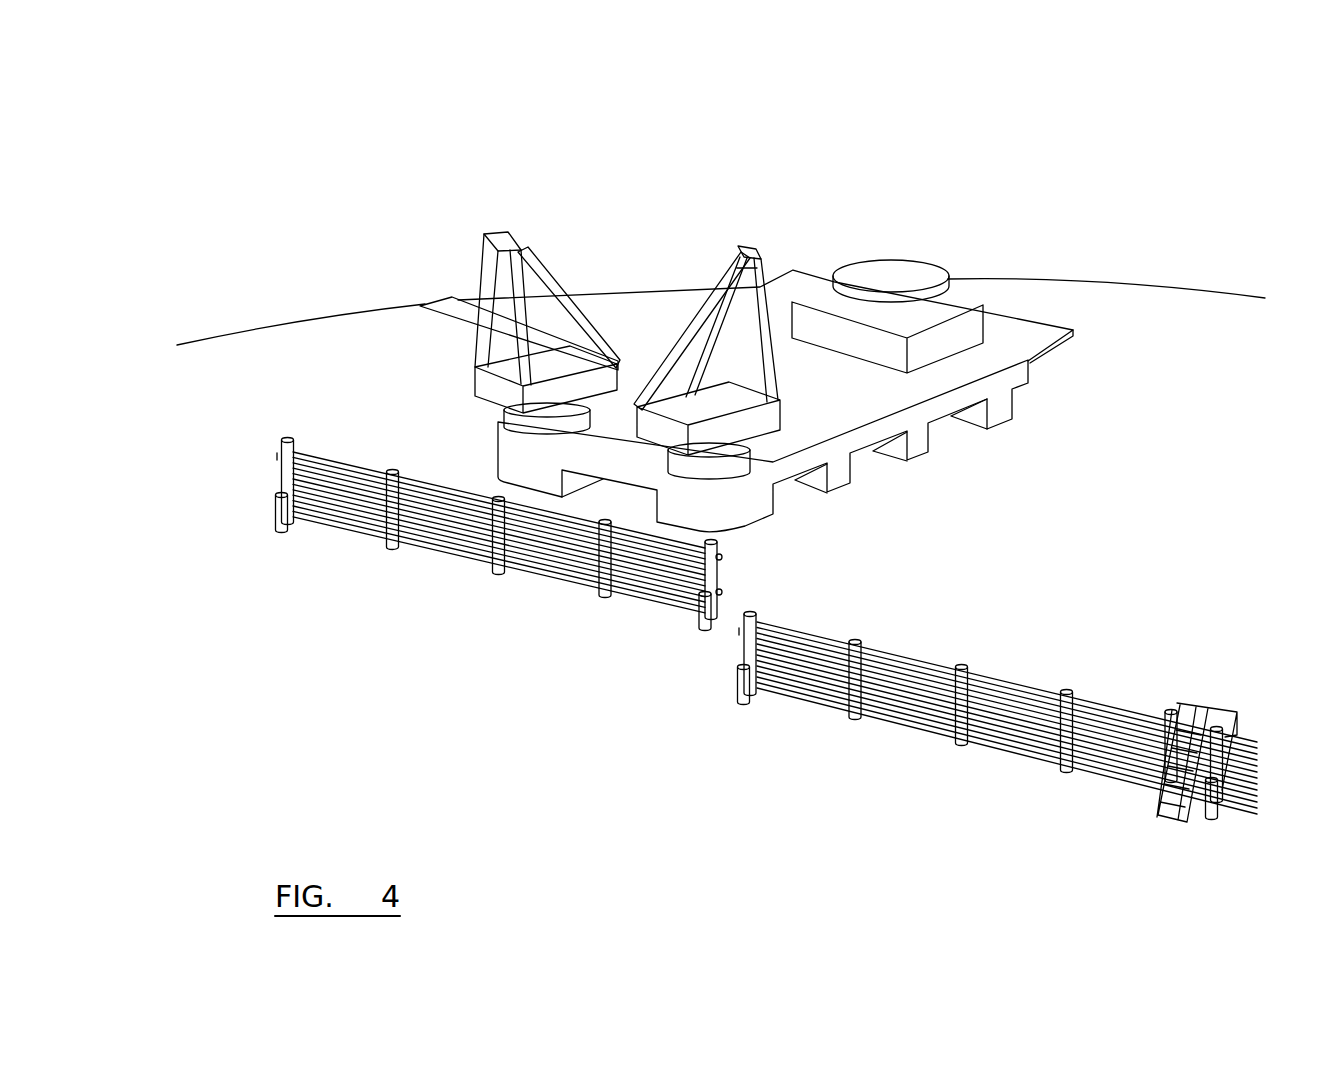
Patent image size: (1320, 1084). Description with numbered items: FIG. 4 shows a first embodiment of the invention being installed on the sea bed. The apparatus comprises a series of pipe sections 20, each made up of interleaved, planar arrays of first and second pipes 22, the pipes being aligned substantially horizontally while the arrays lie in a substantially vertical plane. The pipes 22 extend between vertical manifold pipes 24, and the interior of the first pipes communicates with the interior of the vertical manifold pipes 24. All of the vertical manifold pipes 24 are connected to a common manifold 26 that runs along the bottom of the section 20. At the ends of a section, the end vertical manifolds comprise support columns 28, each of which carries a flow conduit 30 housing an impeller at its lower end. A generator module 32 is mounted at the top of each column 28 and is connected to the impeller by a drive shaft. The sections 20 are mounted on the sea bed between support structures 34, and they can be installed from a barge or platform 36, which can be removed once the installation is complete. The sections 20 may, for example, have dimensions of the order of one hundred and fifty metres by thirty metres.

The pipe section 20 is at (1000, 667).
The first and second pipes 22 is at (1010, 717).
The vertical manifold pipe 24 is at (890, 703).
The common manifold 26 is at (928, 740).
The support column 28 is at (737, 644).
The flow conduit 30 is at (733, 695).
The generator module 32 is at (1215, 693).
The support structure 34 is at (724, 667).
The barge or platform 36 is at (958, 268).